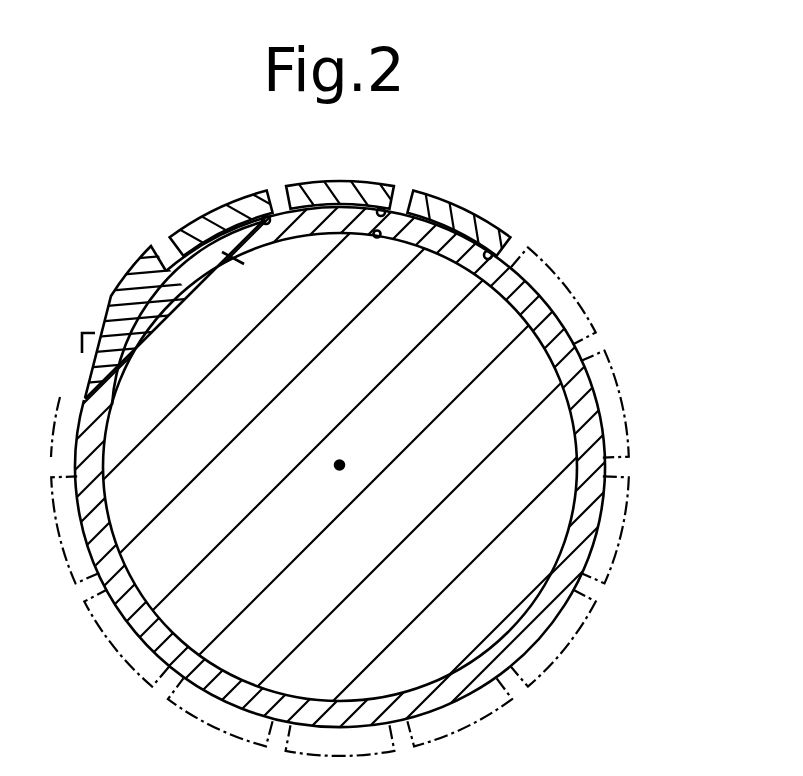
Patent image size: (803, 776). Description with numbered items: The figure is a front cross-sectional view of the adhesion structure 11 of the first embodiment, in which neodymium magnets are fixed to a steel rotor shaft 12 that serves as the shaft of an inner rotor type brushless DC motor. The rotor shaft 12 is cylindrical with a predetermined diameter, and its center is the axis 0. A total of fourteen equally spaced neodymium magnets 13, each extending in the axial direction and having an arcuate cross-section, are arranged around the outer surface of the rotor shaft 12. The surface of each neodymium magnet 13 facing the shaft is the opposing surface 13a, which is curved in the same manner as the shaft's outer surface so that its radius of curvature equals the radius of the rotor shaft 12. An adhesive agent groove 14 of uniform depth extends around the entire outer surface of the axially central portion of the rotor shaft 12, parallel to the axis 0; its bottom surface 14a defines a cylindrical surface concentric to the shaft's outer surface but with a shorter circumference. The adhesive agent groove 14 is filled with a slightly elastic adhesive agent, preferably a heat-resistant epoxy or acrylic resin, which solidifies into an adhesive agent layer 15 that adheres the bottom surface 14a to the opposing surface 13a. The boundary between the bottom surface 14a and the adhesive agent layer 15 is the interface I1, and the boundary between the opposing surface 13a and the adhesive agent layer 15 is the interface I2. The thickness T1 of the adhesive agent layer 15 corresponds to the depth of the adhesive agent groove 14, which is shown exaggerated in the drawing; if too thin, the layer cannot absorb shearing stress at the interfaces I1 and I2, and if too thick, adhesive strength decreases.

The adhesion structure 11 is at (583, 244).
The rotor shaft 12 is at (102, 324).
The neodymium magnet 13 is at (223, 234).
The opposing surface 13a is at (265, 214).
The adhesive agent groove 14 is at (166, 308).
The bottom surface 14a is at (375, 240).
The adhesive agent layer 15 is at (128, 318).
The axis 0 is at (351, 458).
The thickness of the adhesive agent layer T1 is at (231, 262).
The interface I1 is at (320, 234).
The interface I2 is at (200, 243).